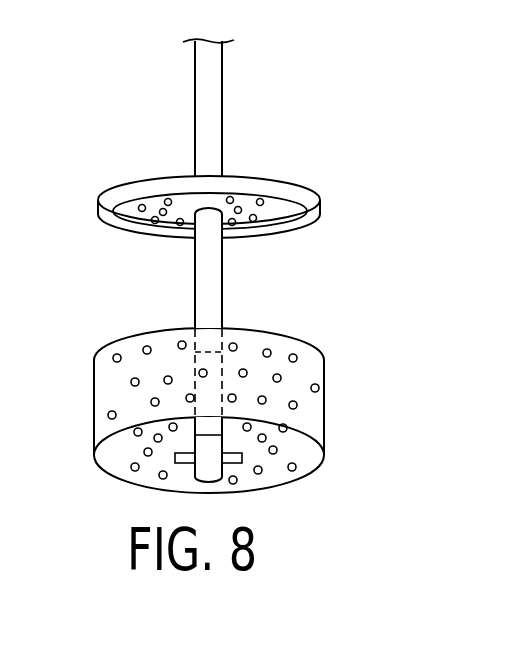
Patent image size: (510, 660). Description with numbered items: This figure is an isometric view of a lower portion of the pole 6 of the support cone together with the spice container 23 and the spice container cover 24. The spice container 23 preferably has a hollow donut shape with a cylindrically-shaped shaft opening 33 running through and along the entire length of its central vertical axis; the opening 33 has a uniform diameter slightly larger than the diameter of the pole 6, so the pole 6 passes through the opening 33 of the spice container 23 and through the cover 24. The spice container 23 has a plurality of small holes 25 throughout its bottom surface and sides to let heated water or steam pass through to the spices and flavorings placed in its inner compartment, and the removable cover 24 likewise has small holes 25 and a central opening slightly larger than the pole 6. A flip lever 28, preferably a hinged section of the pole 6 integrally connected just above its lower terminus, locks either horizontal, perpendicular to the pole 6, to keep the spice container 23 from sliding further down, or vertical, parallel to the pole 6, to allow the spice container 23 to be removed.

The pole 6 is at (230, 106).
The spice container 23 is at (84, 389).
The spice container cover 24 is at (86, 203).
The small holes 25 is at (314, 410).
The flip lever 28 is at (157, 461).
The shaft opening 33 is at (184, 198).